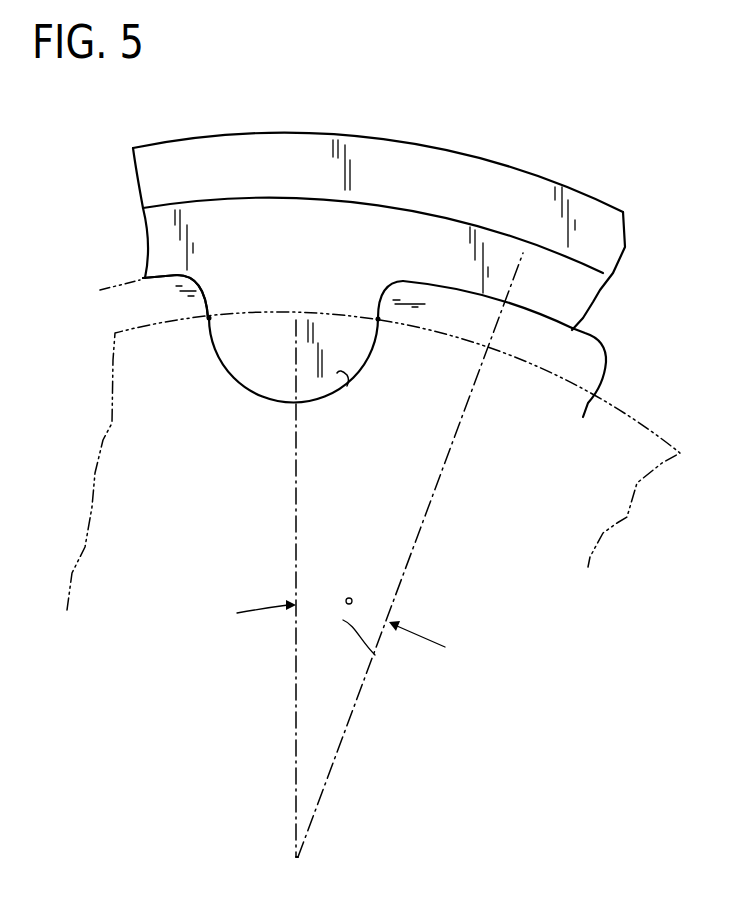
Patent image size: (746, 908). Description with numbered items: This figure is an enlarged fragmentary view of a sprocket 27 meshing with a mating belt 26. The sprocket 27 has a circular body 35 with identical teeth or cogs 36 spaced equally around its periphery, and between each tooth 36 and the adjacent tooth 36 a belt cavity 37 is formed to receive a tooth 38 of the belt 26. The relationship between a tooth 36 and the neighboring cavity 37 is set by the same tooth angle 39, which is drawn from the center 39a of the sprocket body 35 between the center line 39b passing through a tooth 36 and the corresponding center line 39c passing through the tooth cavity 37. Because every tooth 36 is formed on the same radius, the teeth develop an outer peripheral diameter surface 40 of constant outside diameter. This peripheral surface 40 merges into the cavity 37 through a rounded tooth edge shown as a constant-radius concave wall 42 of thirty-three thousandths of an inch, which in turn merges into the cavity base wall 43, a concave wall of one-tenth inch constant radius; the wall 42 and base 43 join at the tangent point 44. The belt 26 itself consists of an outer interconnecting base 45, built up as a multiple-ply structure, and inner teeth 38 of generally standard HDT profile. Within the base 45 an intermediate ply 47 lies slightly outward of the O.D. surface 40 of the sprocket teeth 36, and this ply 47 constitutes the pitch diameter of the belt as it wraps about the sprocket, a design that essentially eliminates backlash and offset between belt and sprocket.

The belt 26 is at (124, 190).
The sprocket 27 is at (96, 425).
The circular body 35 is at (605, 535).
The tooth 36 is at (137, 282).
The belt cavity 37 is at (362, 224).
The belt tooth 38 is at (282, 378).
The tooth angle 39 is at (373, 660).
The center of the sprocket body 39a is at (297, 868).
The center line through a tooth 39b is at (357, 708).
The center line through the tooth cavity 39c is at (297, 702).
The outer peripheral diameter surface 40 is at (590, 340).
The concave radius wall 42 is at (205, 283).
The cavity base wall 43 is at (347, 386).
The tangent point 44 is at (208, 318).
The outer base 45 is at (535, 180).
The intermediate ply 47 is at (465, 223).